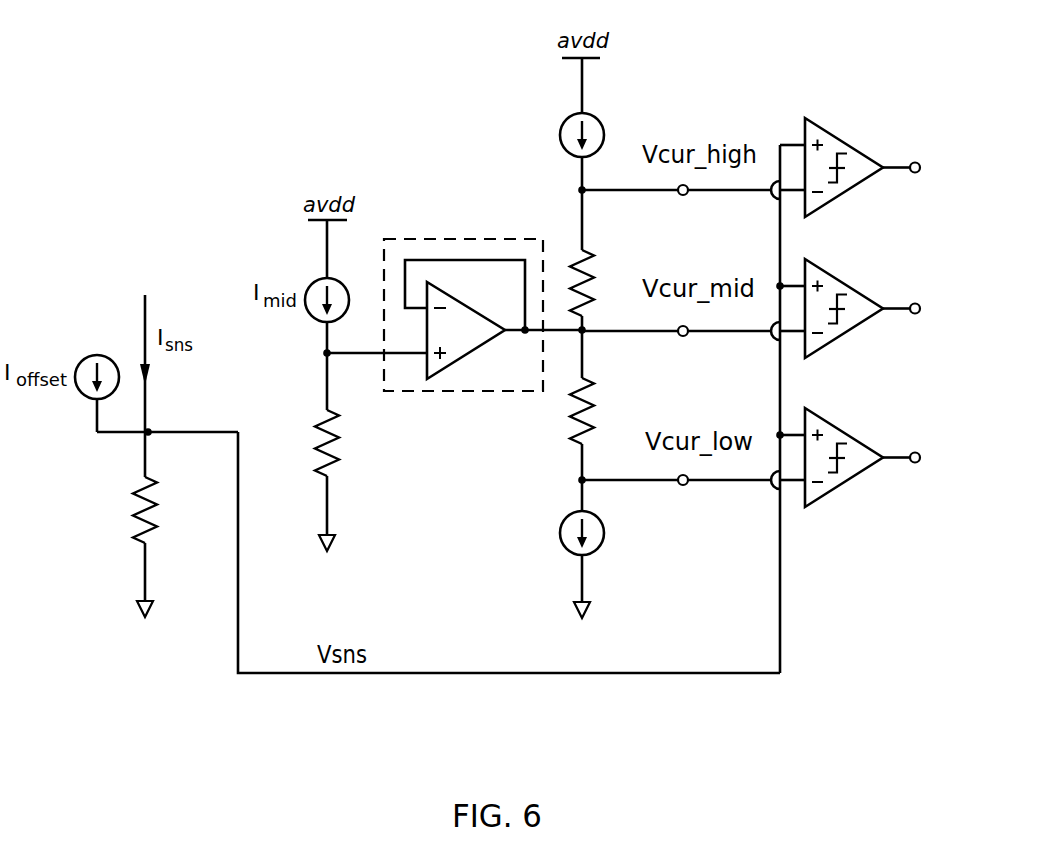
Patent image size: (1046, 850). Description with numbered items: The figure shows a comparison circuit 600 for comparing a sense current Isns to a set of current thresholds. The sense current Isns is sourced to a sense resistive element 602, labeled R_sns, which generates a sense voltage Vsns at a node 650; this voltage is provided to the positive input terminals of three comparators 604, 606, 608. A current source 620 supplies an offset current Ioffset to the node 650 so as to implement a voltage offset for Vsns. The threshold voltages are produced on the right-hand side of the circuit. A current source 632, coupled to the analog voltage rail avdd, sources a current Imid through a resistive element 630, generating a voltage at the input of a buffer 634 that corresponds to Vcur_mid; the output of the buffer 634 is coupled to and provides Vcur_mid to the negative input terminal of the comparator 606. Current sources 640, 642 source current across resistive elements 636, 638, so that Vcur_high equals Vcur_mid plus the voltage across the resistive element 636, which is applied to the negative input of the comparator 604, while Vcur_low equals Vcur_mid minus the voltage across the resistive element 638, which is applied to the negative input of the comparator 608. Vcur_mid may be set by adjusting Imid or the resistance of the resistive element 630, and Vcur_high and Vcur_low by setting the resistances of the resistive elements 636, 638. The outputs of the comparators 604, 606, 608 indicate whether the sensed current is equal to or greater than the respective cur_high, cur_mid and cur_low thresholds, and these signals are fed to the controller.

The comparison circuit 600 is at (99, 60).
The sense resistive element 602 is at (158, 500).
The comparator 604 is at (835, 129).
The comparator 606 is at (835, 270).
The comparator 608 is at (835, 419).
The current source 620 is at (94, 356).
The resistive element 630 is at (318, 420).
The current source 632 is at (313, 284).
The buffer 634 is at (457, 239).
The resistive element 636 is at (591, 252).
The resistive element 638 is at (591, 380).
The current source 640 is at (568, 117).
The current source 642 is at (601, 530).
The node 650 is at (149, 431).